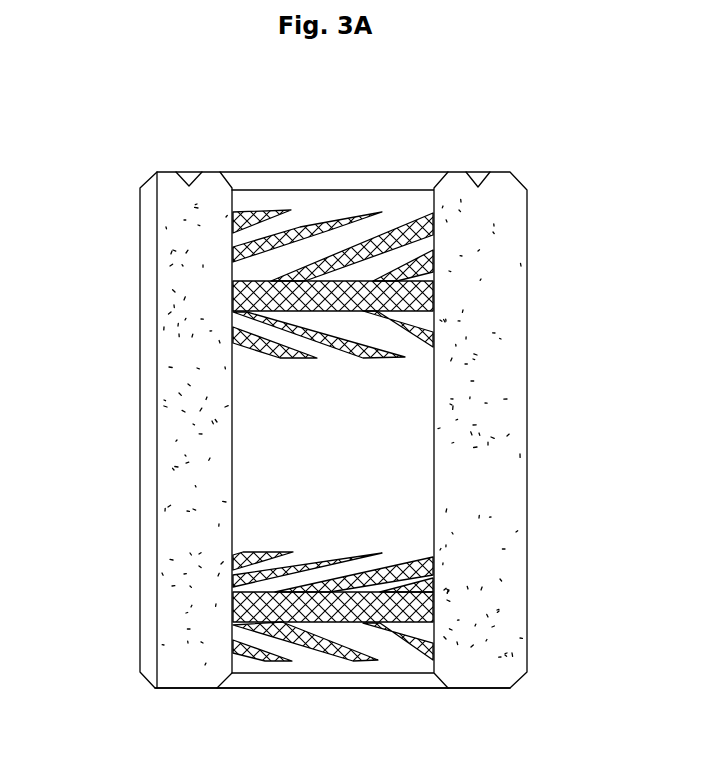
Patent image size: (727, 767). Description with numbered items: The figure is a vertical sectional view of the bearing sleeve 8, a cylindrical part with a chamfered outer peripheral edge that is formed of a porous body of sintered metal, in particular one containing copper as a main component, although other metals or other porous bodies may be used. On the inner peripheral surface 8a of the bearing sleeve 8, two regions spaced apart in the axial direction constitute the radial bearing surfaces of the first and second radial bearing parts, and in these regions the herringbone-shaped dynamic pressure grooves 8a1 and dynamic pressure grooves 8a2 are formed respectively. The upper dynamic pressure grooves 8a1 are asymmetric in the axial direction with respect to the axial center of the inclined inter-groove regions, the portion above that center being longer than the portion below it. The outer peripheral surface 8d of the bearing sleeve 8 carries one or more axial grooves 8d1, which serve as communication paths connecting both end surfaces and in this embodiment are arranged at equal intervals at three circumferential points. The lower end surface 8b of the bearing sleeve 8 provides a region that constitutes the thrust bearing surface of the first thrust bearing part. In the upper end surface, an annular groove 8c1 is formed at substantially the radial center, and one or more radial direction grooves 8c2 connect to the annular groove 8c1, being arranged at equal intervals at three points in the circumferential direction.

The bearing sleeve 8 is at (110, 164).
The inner peripheral surface 8a is at (433, 437).
The dynamic pressure grooves 8a1 is at (283, 222).
The dynamic pressure grooves 8a2 is at (290, 560).
The lower end surface 8b is at (479, 690).
The annular groove 8c1 is at (477, 176).
The radial direction grooves 8c2 is at (207, 180).
The outer peripheral surface 8d is at (170, 172).
The axial grooves 8d1 is at (158, 491).